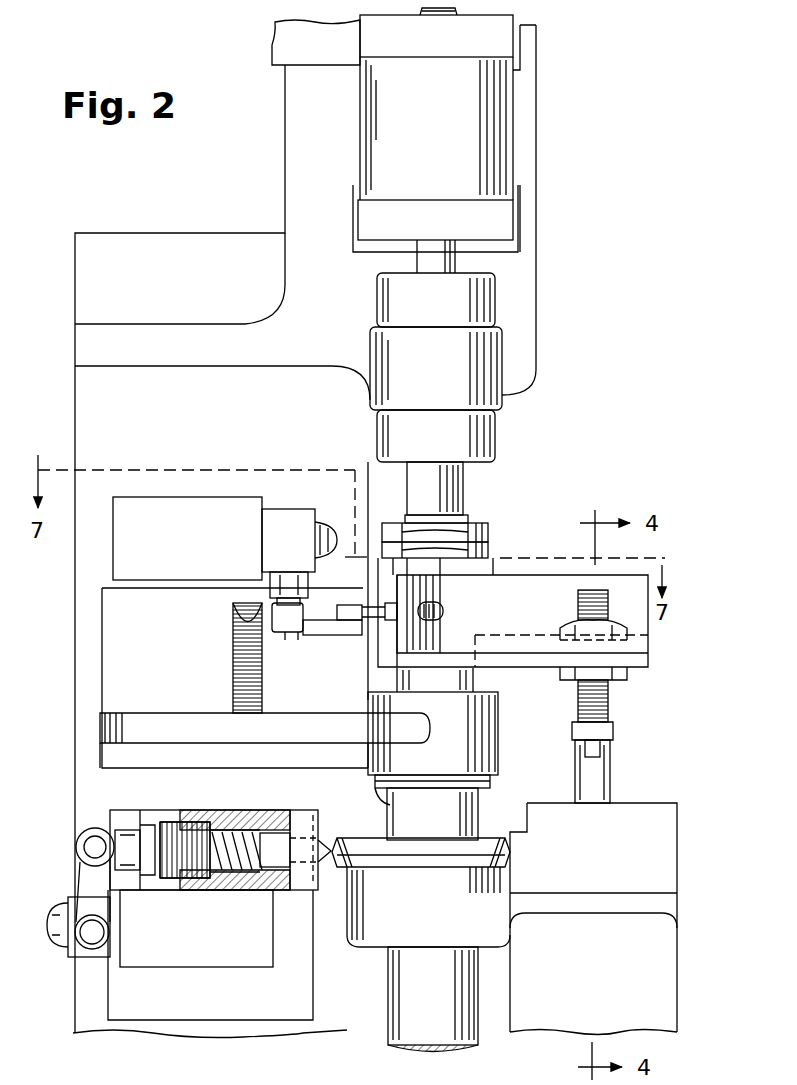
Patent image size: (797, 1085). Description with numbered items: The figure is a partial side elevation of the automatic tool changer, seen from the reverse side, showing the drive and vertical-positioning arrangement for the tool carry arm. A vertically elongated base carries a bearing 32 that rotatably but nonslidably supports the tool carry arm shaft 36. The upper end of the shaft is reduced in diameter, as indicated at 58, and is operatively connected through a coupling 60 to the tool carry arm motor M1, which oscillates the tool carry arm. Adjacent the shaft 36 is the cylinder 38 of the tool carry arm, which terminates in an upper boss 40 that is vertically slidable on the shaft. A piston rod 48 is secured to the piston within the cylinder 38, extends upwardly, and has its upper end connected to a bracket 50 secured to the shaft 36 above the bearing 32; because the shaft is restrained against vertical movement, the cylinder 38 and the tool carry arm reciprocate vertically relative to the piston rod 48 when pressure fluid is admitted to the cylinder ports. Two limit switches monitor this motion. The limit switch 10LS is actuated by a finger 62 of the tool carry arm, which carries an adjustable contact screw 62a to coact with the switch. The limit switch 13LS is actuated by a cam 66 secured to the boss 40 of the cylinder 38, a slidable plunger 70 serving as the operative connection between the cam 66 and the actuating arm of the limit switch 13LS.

The tool carry arm motor M1 is at (473, 150).
The coupling 60 is at (476, 347).
The reduced diameter upper end of tool carry arm shaft 58 is at (450, 490).
The bracket 50 is at (500, 590).
The finger 62 is at (426, 596).
The adjustable contact screw 62a is at (390, 620).
The limit switch 10LS is at (225, 556).
The bearing 32 is at (455, 773).
The tool carry arm shaft 36 is at (462, 823).
The cam 66 is at (378, 845).
The upper boss 40 is at (440, 915).
The cylinder 38 is at (665, 947).
The piston rod 48 is at (612, 768).
The slidable plunger 70 is at (273, 845).
The limit switch 13LS is at (225, 949).